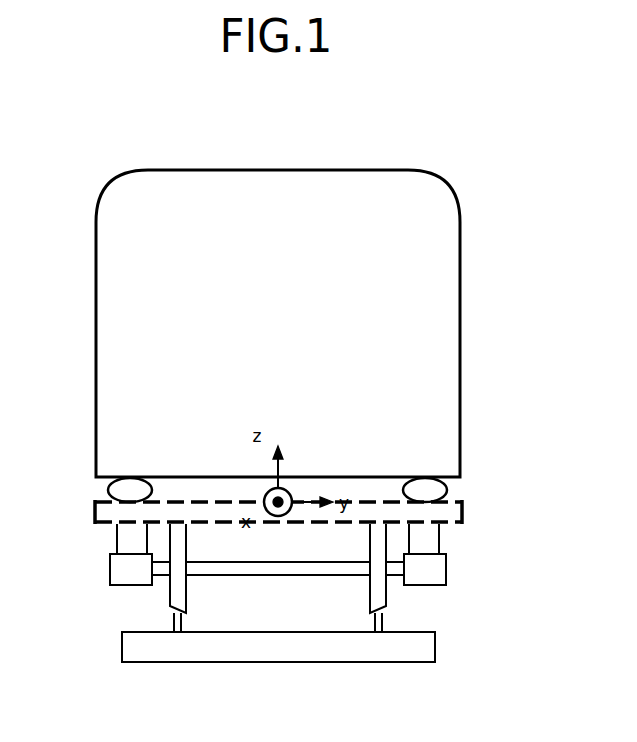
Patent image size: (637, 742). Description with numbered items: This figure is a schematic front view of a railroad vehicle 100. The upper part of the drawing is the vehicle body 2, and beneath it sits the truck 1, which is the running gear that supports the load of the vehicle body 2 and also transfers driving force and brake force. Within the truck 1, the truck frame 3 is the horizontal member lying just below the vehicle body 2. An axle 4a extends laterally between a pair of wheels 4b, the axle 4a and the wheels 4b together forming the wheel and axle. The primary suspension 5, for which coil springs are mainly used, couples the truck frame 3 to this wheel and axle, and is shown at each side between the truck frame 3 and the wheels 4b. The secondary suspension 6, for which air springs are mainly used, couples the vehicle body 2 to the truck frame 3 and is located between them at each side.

The railroad vehicle 100 is at (331, 139).
The vehicle body 2 is at (397, 169).
The truck 1 is at (500, 502).
The truck frame 3 is at (93, 520).
The axle 4a is at (218, 576).
The wheels 4b is at (165, 600).
The primary suspension 5 is at (119, 540).
The secondary suspension 6 is at (116, 483).